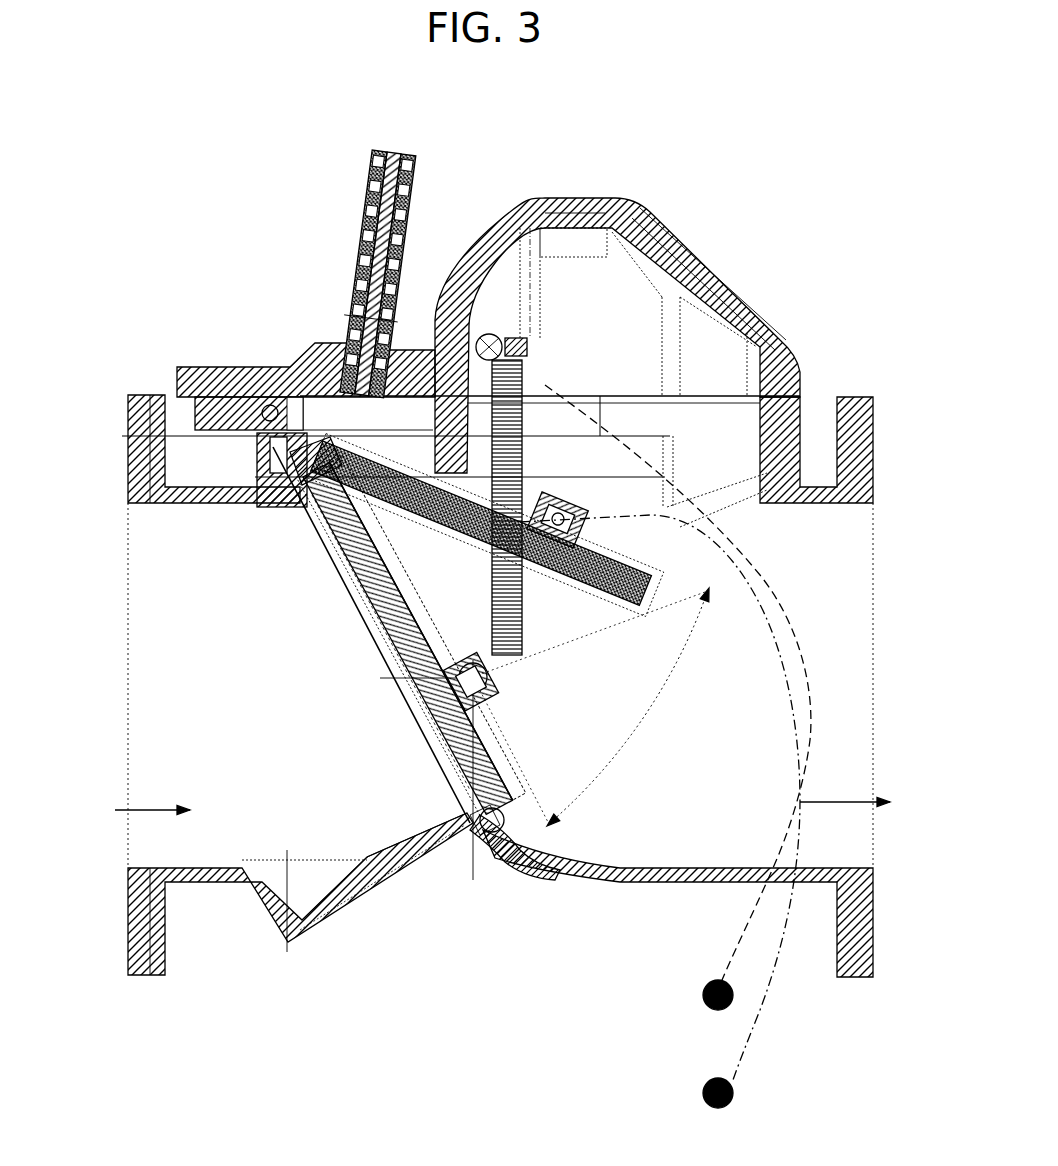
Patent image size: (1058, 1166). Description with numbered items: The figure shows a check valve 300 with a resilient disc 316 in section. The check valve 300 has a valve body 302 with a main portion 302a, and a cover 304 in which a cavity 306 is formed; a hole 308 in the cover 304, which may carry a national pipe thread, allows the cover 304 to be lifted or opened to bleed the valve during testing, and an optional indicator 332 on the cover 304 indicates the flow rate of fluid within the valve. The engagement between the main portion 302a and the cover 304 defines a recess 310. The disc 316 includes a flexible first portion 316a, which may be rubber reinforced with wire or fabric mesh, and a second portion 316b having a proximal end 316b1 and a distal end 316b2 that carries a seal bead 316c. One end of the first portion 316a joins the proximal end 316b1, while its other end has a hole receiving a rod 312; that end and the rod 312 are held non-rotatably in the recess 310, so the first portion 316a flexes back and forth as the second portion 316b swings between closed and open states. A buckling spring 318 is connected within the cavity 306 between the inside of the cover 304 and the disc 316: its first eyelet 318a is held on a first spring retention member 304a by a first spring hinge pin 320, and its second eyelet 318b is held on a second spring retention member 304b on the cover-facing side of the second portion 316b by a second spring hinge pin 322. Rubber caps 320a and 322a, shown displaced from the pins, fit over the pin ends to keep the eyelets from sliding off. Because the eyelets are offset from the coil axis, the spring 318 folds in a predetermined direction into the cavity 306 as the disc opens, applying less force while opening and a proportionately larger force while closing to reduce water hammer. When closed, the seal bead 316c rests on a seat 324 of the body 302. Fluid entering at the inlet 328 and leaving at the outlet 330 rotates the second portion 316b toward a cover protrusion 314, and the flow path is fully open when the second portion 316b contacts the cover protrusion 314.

The check valve 300 is at (255, 148).
The valve body 302 is at (848, 397).
The main portion of the valve body 302a is at (205, 408).
The cover 304 is at (713, 280).
The first spring retention member 304a is at (505, 335).
The second spring retention member 304b is at (465, 658).
The cavity 306 is at (636, 285).
The hole 308 is at (553, 213).
The recess 310 is at (258, 402).
The rod 312 is at (265, 405).
The cover protrusion 314 is at (447, 477).
The resilient disc 316 is at (350, 620).
The first portion of the disc 316a is at (265, 473).
The second portion of the disc 316b is at (345, 550).
The proximal end of the second portion 316b1 is at (312, 538).
The distal end of the second portion 316b2 is at (520, 755).
The seal bead 316c is at (516, 855).
The buckling spring 318 is at (520, 624).
The first eyelet 318a is at (540, 375).
The second eyelet 318b is at (485, 678).
The first spring hinge pin 320 is at (490, 335).
The rubber cap 320a is at (705, 995).
The second spring hinge pin 322 is at (380, 678).
The rubber cap 322a is at (472, 825).
The seat 324 is at (480, 822).
The inlet 328 is at (123, 811).
The outlet 330 is at (845, 786).
The indicator 332 is at (373, 165).